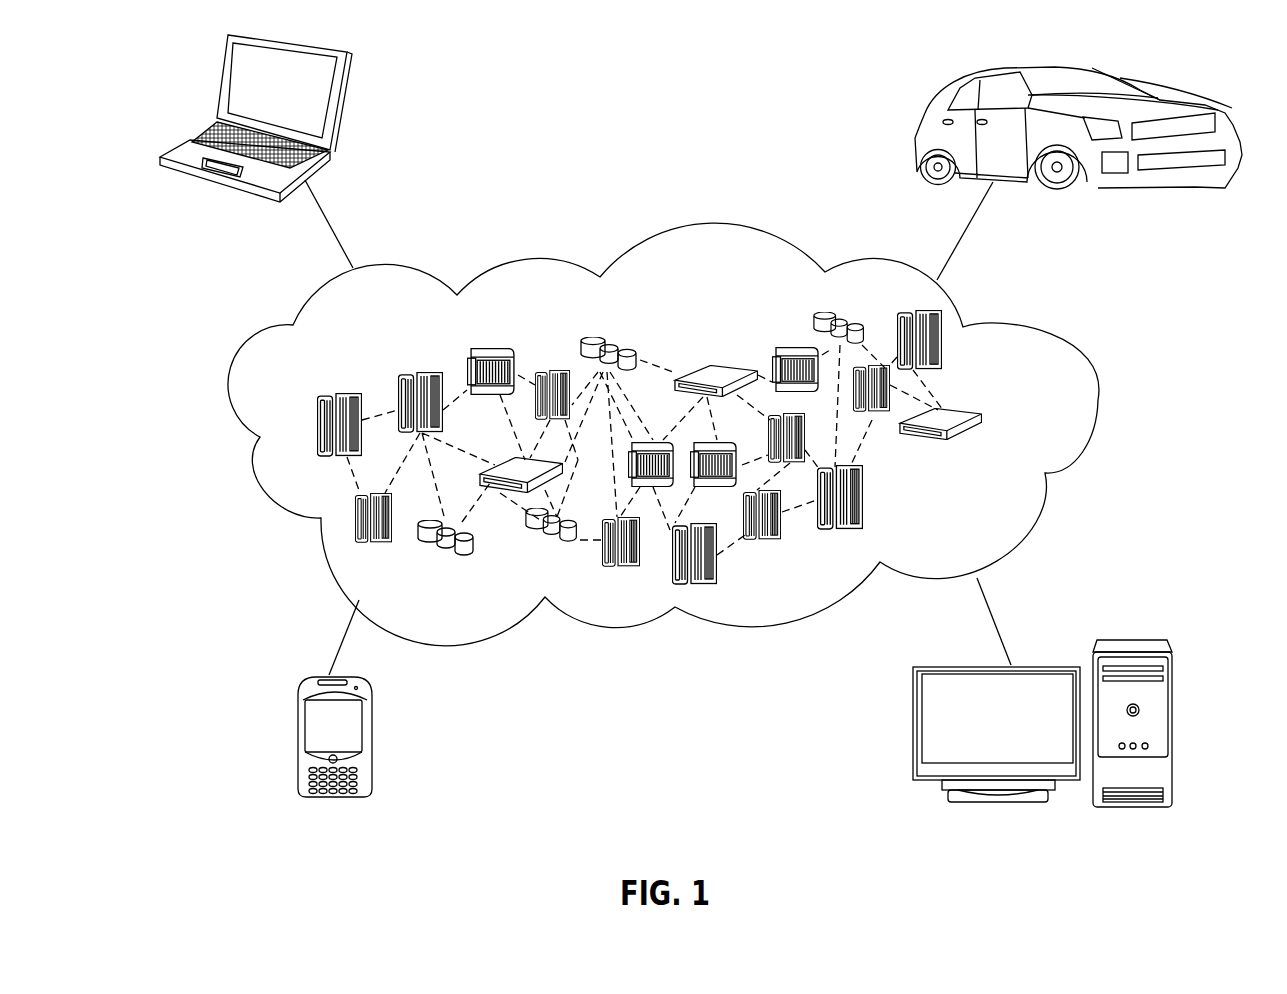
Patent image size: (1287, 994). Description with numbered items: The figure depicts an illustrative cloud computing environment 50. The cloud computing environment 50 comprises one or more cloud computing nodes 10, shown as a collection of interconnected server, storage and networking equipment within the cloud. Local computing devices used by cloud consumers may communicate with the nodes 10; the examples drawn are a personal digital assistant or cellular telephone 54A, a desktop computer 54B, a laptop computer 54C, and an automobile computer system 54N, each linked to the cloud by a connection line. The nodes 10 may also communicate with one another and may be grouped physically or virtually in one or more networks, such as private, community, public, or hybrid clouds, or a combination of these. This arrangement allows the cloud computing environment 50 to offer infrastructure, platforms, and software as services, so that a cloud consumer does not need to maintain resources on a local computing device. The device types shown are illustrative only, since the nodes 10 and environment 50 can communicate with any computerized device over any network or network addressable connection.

The cloud computing nodes 10 is at (740, 447).
The cloud computing environment 50 is at (1055, 340).
The personal digital assistant (PDA) or cellular telephone 54A is at (298, 742).
The desktop computer 54B is at (1138, 640).
The laptop computer 54C is at (338, 105).
The automobile computer system 54N is at (925, 113).